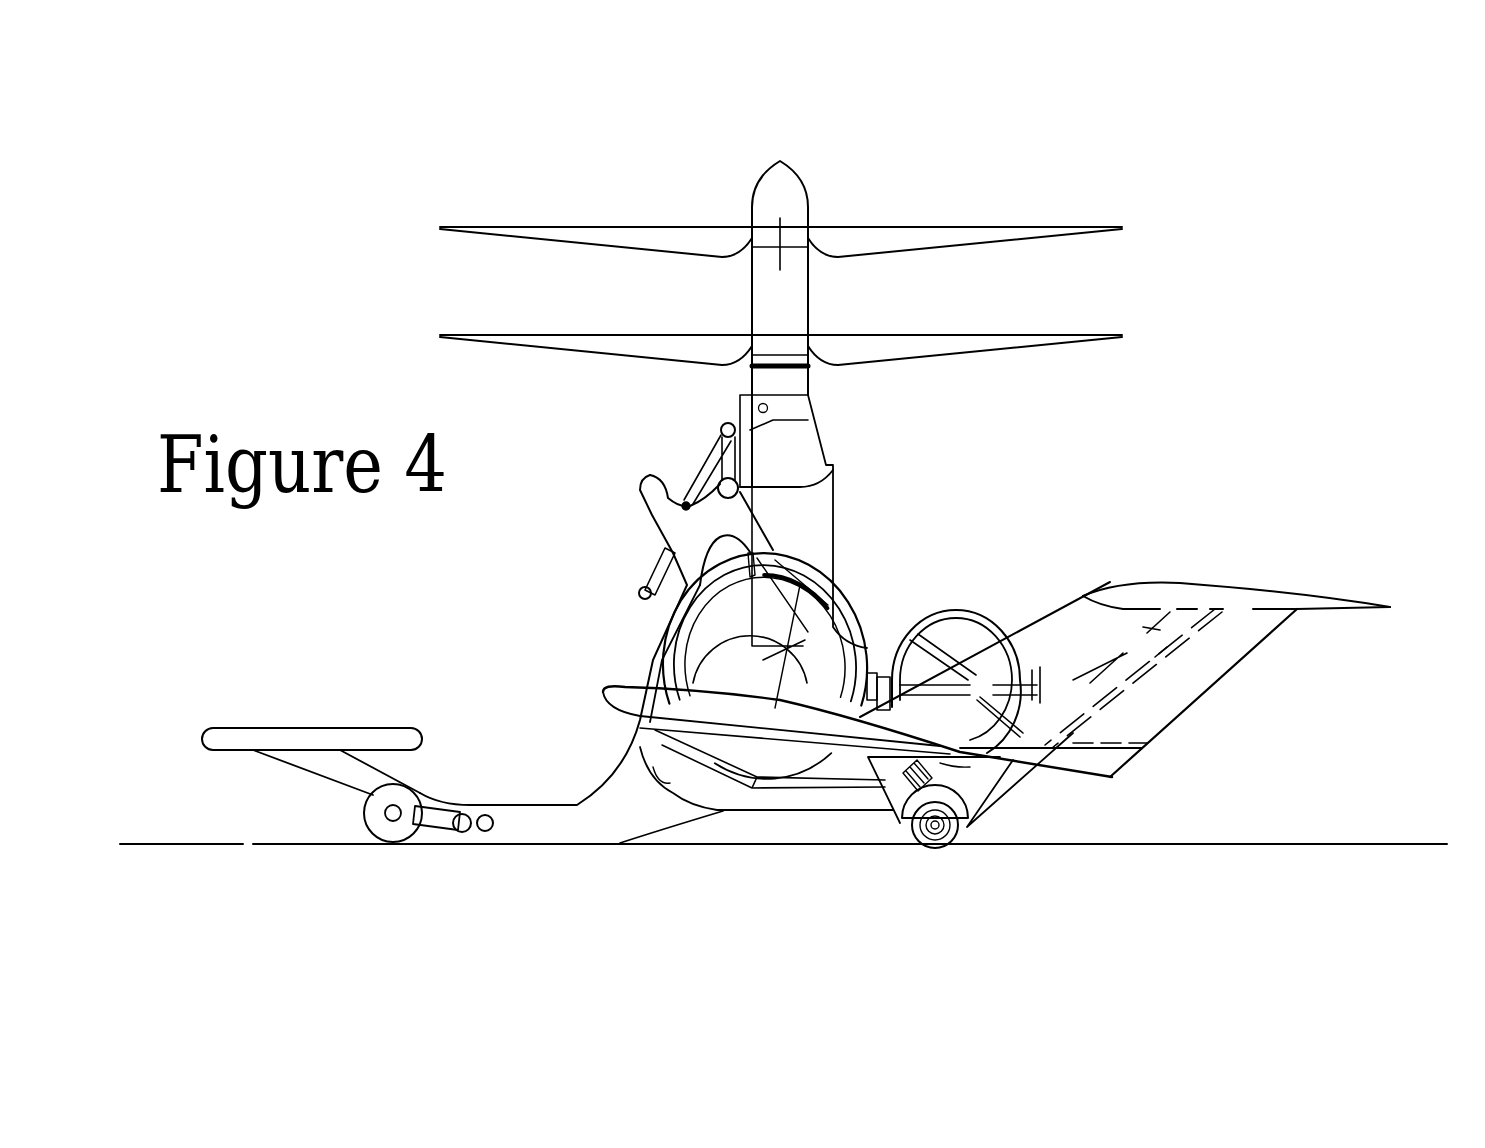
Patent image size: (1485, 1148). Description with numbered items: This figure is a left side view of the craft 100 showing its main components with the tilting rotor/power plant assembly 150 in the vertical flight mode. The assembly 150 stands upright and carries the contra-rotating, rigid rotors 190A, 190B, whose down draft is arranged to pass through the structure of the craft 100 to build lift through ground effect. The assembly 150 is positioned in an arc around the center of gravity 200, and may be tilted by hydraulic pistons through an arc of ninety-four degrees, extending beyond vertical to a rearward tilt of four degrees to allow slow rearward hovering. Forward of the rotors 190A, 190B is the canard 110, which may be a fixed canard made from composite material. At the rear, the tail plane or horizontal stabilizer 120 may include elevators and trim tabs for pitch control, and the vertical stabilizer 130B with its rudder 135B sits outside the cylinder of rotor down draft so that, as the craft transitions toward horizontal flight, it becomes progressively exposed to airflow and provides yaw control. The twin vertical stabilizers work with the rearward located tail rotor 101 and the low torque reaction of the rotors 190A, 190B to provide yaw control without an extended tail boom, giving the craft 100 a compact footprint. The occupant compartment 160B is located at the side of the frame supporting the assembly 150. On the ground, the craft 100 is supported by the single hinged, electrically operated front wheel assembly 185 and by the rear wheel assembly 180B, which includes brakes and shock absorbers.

The craft 100 is at (413, 600).
The tail rotor 101 is at (930, 643).
The canard 110 is at (207, 730).
The rear tail plane (horizontal stabilizer) 120 is at (1365, 603).
The vertical stabilizer 130B is at (1057, 647).
The rudder 135B is at (1197, 700).
The tilting rotor/power plant assembly 150 is at (810, 300).
The occupant compartment 160B is at (868, 625).
The rear wheel assembly 180B is at (960, 827).
The front wheel assembly 185 is at (365, 820).
The rotor 190A is at (1013, 335).
The rotor 190B is at (1010, 227).
The center of gravity 200 is at (835, 478).